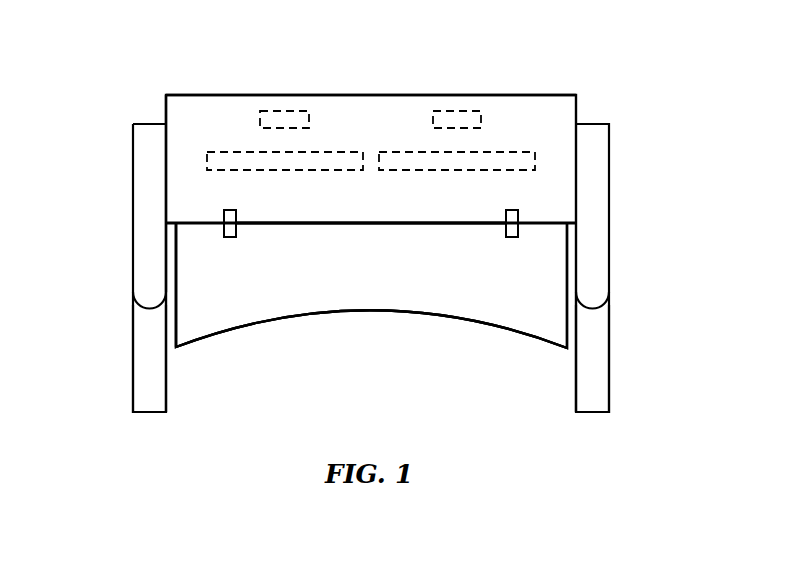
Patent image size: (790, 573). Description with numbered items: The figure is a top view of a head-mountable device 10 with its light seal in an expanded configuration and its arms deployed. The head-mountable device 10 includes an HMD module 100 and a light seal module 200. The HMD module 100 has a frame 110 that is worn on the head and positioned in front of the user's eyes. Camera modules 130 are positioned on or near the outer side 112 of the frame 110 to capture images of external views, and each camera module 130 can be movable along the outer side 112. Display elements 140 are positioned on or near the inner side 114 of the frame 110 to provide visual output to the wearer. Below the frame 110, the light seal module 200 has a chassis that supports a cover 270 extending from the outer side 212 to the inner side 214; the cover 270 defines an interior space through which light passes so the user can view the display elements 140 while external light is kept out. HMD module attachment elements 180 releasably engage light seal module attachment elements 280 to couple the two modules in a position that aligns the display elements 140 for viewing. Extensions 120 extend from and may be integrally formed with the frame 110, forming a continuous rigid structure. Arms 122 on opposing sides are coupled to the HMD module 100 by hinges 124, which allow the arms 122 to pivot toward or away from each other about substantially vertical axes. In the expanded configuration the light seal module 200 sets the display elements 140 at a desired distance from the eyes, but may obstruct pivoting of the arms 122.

The head-mountable device 10 is at (152, 83).
The HMD module 100 is at (165, 98).
The frame 110 is at (175, 117).
The outer side 112 is at (557, 93).
The inner side 114 is at (578, 226).
The extensions 120 is at (147, 192).
The arms 122 is at (147, 357).
The hinges 124 is at (147, 288).
The camera modules 130 is at (289, 108).
The display elements 140 is at (343, 152).
The HMD module attachment elements 180 is at (236, 218).
The light seal module 200 is at (192, 242).
The outer side 212 is at (177, 213).
The inner side 214 is at (322, 313).
The cover 270 is at (543, 257).
The light seal module attachment elements 280 is at (236, 229).